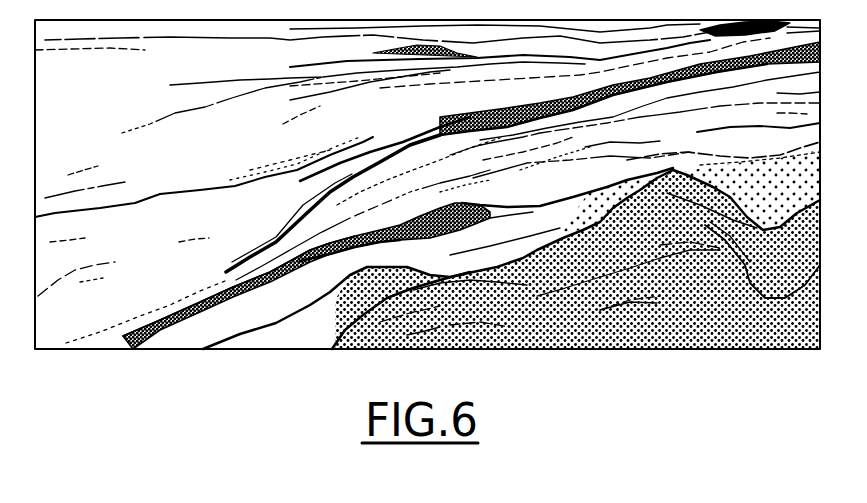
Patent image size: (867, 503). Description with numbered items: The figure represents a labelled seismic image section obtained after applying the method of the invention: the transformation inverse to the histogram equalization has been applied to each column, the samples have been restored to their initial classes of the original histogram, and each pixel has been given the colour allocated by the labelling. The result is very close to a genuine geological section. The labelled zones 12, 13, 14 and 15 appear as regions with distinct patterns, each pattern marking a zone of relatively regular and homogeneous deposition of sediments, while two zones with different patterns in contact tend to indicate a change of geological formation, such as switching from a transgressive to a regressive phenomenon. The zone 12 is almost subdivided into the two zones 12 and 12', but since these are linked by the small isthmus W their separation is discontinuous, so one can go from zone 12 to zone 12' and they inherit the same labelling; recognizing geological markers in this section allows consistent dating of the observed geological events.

The labelled zone 12 is at (204, 186).
The labelled zone 12' is at (299, 259).
The labelled zone 13 is at (448, 78).
The labelled zone 14 is at (630, 163).
The labelled zone 15 is at (511, 259).
The isthmus W is at (406, 139).